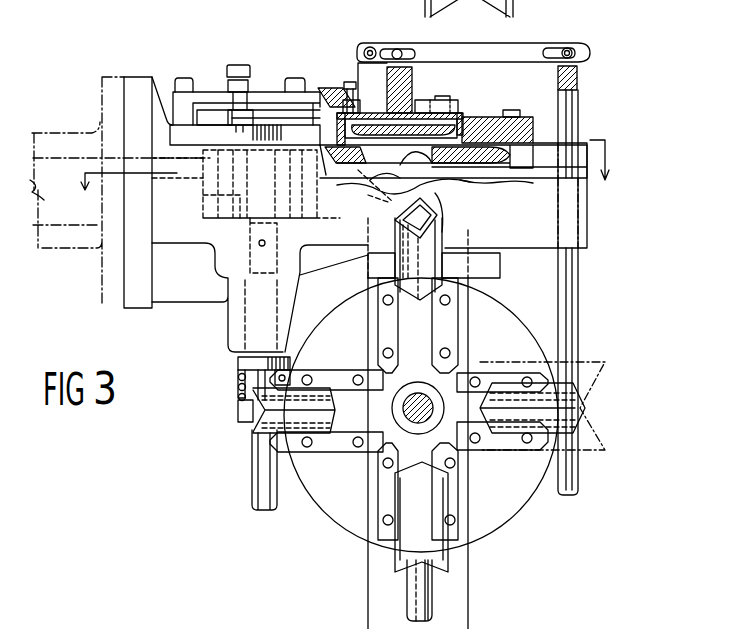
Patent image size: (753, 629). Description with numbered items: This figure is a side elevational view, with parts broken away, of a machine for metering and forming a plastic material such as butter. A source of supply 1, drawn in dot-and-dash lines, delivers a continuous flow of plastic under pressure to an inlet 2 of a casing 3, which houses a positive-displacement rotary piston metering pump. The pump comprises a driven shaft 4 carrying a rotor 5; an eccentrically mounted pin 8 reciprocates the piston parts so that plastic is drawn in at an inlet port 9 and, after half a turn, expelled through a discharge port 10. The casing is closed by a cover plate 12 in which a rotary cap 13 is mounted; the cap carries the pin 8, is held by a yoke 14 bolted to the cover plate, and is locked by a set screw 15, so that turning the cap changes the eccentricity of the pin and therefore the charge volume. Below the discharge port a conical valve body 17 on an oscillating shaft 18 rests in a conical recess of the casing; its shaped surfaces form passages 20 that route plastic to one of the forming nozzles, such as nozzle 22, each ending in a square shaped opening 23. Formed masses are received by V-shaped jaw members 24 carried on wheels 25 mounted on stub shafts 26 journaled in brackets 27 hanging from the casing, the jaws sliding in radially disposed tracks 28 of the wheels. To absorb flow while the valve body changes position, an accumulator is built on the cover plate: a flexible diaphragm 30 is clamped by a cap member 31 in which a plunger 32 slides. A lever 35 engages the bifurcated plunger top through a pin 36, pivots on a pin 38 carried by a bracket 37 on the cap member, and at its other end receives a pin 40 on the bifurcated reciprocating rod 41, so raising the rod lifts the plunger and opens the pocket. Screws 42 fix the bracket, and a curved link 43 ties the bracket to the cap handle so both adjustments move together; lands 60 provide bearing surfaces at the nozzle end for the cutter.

The source of supply 1 is at (50, 190).
The inlet 2 is at (131, 213).
The casing 3 is at (185, 298).
The driven shaft 4 is at (250, 497).
The rotor 5 is at (213, 182).
The pin 8 is at (210, 188).
The inlet port 9 is at (205, 216).
The discharge port 10 is at (221, 125).
The cover plate 12 is at (560, 131).
The cap 13 is at (208, 107).
The yoke 14 is at (213, 92).
The set screw 15 is at (238, 64).
The conical valve body 17 is at (490, 182).
The shaft 18 is at (443, 270).
The passages 20 is at (372, 170).
The forming nozzle 22 is at (448, 188).
The square shaped opening 23 is at (395, 224).
The V-shaped jaw member 24 is at (240, 432).
The wheel 25 is at (322, 490).
The stub shaft 26 is at (405, 422).
The bracket 27 is at (370, 276).
The radially disposed track 28 is at (345, 385).
The diaphragm 30 is at (487, 145).
The cap member 31 is at (475, 115).
The plunger 32 is at (412, 75).
The lever 35 is at (528, 49).
The pin 36 is at (397, 49).
The bracket 37 is at (355, 98).
The pin 38 is at (364, 49).
The pin 40 is at (567, 50).
The reciprocating rod 41 is at (580, 77).
The screws 42 is at (452, 99).
The curved link 43 is at (343, 84).
The lands 60 is at (440, 210).